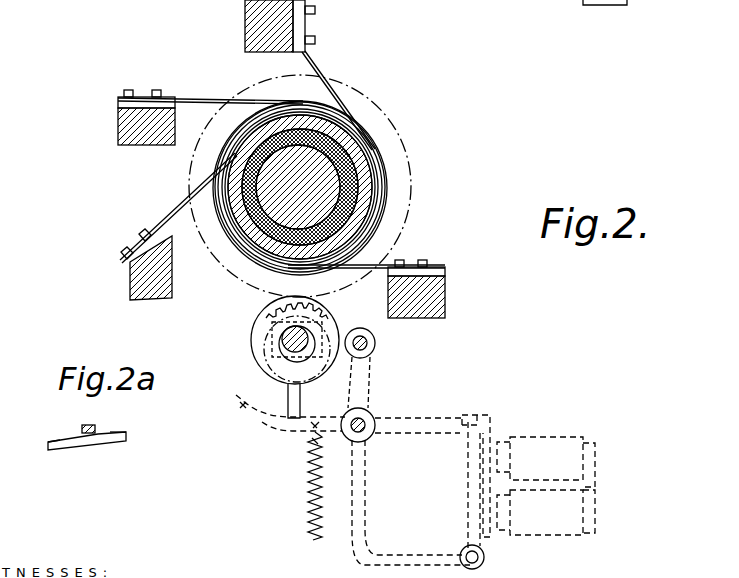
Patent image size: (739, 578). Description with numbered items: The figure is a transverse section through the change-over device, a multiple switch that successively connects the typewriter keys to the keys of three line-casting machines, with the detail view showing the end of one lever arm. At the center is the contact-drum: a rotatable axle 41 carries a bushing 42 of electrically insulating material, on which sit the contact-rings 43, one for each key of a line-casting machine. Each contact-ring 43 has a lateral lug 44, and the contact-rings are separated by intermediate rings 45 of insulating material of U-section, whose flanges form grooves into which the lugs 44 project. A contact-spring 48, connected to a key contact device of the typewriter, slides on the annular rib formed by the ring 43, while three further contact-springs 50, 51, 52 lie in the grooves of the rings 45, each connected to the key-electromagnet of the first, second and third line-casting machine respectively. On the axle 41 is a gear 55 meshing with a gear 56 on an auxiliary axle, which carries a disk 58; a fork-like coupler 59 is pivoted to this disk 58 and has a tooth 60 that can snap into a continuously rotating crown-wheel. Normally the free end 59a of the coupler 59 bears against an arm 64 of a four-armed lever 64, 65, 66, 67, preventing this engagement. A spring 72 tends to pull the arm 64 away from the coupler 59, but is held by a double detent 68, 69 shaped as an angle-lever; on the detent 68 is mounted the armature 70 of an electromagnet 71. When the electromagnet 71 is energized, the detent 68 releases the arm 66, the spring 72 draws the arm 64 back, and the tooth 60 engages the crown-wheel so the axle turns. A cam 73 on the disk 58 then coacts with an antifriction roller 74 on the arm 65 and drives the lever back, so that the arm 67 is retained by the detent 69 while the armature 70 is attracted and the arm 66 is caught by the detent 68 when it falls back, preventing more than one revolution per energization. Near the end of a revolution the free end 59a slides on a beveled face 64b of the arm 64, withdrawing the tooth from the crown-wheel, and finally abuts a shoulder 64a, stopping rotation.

In FIG. 2, the rotatable axle 41 is at (372, 158).
In FIG. 2, the bushing 42 is at (380, 196).
In FIG. 2, the contact-ring 43 is at (366, 134).
In FIG. 2, the lateral lug 44 is at (240, 150).
In FIG. 2, the intermediate ring 45 is at (373, 180).
In FIG. 2, the contact-spring 48 is at (196, 99).
In FIG. 2, the contact-spring 50 is at (162, 220).
In FIG. 2, the contact-spring 51 is at (327, 96).
In FIG. 2, the contact-spring 52 is at (395, 245).
In FIG. 2, the gear 55 is at (195, 155).
In FIG. 2, the gear 56 is at (265, 352).
In FIG. 2, the disk 58 is at (272, 364).
In FIG. 2, the fork-like coupler 59 is at (275, 330).
In FIG. 2, the free end of the coupler 59a is at (302, 401).
In FIG. 2A, the free end of the coupler 59a is at (95, 419).
In FIG. 2, the tooth 60 is at (282, 375).
In FIG. 2, the arm of the four-armed lever 64 is at (281, 413).
In FIG. 2A, the arm of the four-armed lever 64 is at (58, 450).
In FIG. 2, the shoulder 64a is at (310, 423).
In FIG. 2A, the shoulder 64a is at (125, 433).
In FIG. 2A, the beveled face 64b is at (56, 445).
In FIG. 2, the lever arm 65 is at (369, 399).
In FIG. 2, the lever arm 66 is at (414, 432).
In FIG. 2, the lever arm 67 is at (364, 487).
In FIG. 2, the detent 68 is at (468, 487).
In FIG. 2, the detent 69 is at (410, 555).
In FIG. 2, the armature 70 is at (484, 437).
In FIG. 2, the electromagnet 71 is at (546, 486).
In FIG. 2, the spring 72 is at (306, 484).
In FIG. 2, the cam 73 is at (262, 344).
In FIG. 2, the antifriction roller 74 is at (361, 328).